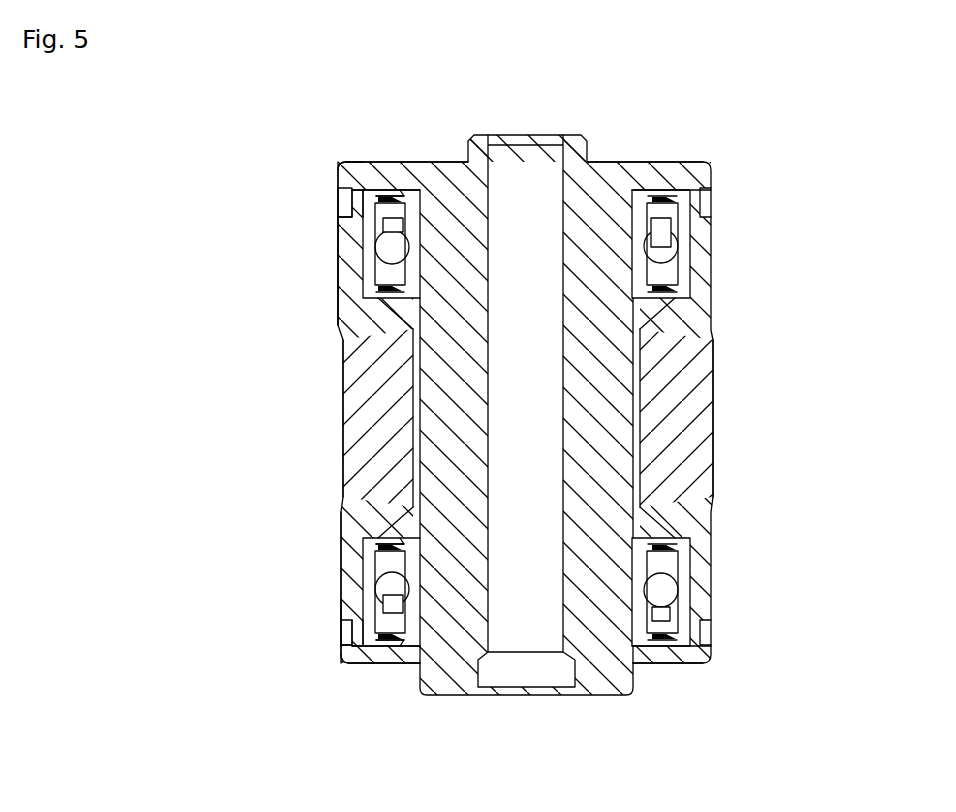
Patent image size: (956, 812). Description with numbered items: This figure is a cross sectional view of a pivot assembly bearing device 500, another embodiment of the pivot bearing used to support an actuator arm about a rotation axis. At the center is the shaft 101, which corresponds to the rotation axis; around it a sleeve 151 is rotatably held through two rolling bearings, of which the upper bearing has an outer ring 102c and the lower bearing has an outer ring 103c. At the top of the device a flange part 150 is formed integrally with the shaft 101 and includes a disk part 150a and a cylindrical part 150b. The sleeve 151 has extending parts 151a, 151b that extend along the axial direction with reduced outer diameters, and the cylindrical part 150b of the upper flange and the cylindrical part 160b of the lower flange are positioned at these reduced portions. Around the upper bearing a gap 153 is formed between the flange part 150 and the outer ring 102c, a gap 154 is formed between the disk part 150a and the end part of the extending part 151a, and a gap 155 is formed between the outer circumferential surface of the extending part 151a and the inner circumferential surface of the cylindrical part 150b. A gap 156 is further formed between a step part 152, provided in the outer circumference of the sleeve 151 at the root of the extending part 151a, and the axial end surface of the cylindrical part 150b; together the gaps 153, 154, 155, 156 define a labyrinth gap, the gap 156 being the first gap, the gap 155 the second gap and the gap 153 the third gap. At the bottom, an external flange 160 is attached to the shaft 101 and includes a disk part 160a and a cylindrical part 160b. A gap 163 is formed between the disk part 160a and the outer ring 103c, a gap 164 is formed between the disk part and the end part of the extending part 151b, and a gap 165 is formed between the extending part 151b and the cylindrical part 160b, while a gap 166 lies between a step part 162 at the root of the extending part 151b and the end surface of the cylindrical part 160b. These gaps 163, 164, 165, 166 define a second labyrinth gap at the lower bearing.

The pivot assembly bearing device 500 is at (757, 187).
The shaft 101 is at (452, 178).
The flange part 150 is at (341, 163).
The disk part 150a is at (412, 170).
The cylindrical part 150b is at (345, 187).
The sleeve 151 is at (372, 438).
The extending part 151a is at (353, 190).
The extending part 151b is at (348, 618).
The step part 152 is at (336, 237).
The gap 153 is at (377, 188).
The gap 154 is at (343, 160).
The gap 155 is at (341, 206).
The gap 156 is at (338, 217).
The outer ring 102c is at (405, 318).
The outer ring 103c is at (392, 521).
The external flange 160 is at (362, 668).
The disk part 160a is at (395, 658).
The cylindrical part 160b is at (345, 628).
The step part 162 is at (378, 562).
The gap 163 is at (378, 650).
The gap 164 is at (357, 664).
The gap 165 is at (352, 645).
The gap 166 is at (352, 608).